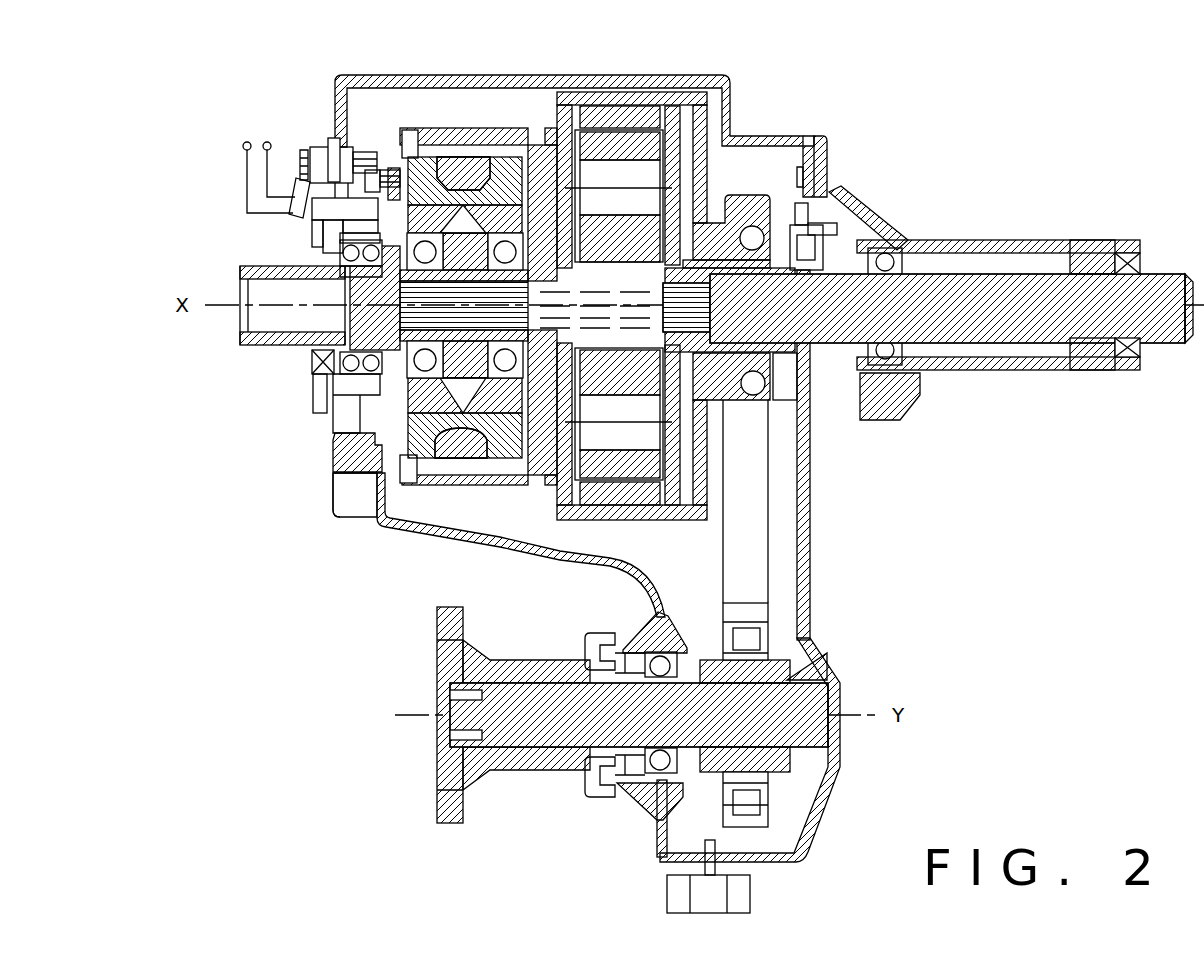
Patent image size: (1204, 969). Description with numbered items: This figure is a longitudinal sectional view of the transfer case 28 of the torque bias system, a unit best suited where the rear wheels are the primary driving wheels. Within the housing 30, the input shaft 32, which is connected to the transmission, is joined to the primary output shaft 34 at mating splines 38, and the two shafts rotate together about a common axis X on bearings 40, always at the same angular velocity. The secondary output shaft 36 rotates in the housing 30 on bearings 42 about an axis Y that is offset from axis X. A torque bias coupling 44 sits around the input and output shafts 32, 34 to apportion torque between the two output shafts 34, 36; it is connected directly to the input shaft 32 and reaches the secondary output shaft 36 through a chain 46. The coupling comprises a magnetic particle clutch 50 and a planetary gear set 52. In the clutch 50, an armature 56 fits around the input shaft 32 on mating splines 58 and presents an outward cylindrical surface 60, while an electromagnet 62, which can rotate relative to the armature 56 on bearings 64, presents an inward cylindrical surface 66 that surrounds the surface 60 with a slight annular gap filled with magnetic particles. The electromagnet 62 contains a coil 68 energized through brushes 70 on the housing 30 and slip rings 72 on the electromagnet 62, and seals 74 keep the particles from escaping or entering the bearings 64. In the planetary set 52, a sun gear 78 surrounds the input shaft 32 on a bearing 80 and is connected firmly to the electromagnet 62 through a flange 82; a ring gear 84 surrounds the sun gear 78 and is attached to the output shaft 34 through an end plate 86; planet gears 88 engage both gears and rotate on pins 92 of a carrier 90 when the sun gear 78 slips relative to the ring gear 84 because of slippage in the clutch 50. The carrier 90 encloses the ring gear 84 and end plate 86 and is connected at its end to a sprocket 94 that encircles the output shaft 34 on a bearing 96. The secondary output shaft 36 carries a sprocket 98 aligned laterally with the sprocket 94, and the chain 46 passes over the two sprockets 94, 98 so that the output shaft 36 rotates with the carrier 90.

The transfer case 28 is at (938, 154).
The housing 30 is at (410, 530).
The input shaft 32 is at (258, 352).
The primary output shaft 34 is at (1033, 327).
The secondary output shaft 36 is at (515, 742).
The mating splines 38 is at (897, 240).
The bearings 40 is at (320, 376).
The bearings 42 is at (658, 765).
The torque bias coupling 44 is at (418, 504).
The chain 46 is at (760, 555).
The magnetic particle clutch 50 is at (398, 124).
The planetary gear set 52 is at (712, 113).
The armature 56 is at (350, 450).
The mating splines 58 is at (390, 280).
The cylindrical surface 60 is at (392, 470).
The electromagnet 62 is at (413, 128).
The bearings 64 is at (395, 395).
The cylindrical surface 66 is at (500, 308).
The coil 68 is at (463, 157).
The brushes 70 is at (380, 185).
The slip rings 72 is at (393, 160).
The seals 74 is at (473, 453).
The sun gear 78 is at (803, 442).
The bearing 80 is at (808, 475).
The flange 82 is at (568, 428).
The ring gear 84 is at (642, 124).
The end plate 86 is at (667, 167).
The planet gears 88 is at (703, 118).
The carrier 90 is at (605, 102).
The pins 92 is at (598, 180).
The sprocket 94 is at (750, 216).
The bearing 96 is at (790, 222).
The sprocket 98 is at (750, 827).